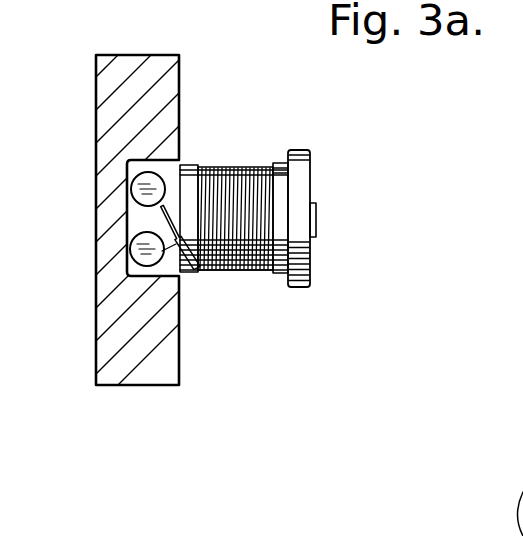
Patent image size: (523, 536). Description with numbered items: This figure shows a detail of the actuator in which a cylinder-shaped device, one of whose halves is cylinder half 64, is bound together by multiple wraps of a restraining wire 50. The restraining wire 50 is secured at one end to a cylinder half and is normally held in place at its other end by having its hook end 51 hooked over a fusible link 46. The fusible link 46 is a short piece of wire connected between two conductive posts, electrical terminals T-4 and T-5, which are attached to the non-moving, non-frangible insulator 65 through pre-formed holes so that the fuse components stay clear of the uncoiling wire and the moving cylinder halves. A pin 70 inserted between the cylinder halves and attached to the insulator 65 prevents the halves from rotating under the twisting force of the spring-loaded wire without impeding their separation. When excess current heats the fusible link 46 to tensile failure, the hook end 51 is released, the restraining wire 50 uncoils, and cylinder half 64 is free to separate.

The fusible link 46 is at (163, 207).
The restraining wire 50 is at (238, 167).
The hook end 51 is at (198, 273).
The cylinder half 64 is at (298, 188).
The insulator 65 is at (122, 372).
The pin 70 is at (316, 218).
The electrical terminal T-5 is at (140, 182).
The electrical terminal T-4 is at (133, 278).